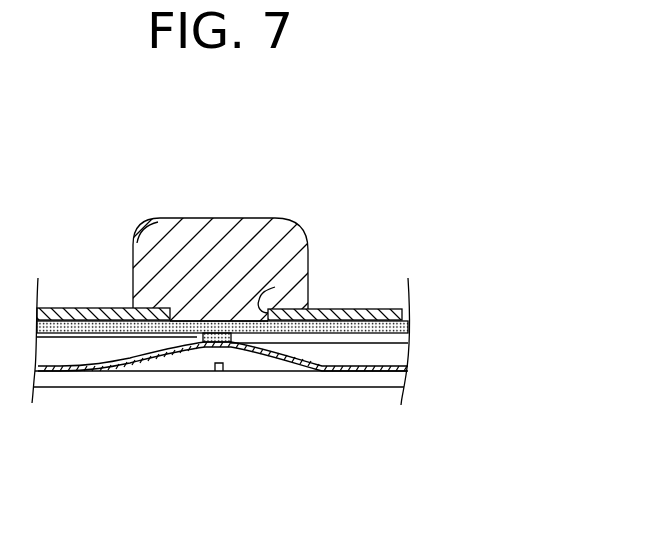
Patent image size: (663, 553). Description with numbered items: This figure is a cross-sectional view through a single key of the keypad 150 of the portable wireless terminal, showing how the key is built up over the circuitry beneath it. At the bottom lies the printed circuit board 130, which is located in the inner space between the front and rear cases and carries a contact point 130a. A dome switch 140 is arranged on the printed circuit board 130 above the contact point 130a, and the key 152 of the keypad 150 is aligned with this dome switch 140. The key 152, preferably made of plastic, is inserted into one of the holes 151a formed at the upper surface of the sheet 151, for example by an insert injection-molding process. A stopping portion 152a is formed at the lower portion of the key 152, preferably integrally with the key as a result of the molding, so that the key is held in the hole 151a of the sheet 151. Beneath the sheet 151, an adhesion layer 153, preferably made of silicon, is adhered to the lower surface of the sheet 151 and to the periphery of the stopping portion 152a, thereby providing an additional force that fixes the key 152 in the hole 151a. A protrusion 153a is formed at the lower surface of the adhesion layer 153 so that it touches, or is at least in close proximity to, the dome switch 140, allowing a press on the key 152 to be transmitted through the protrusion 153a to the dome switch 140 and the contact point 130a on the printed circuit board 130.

The keypad 150 is at (318, 187).
The key 152 is at (220, 237).
The stopping portion 152a is at (291, 323).
The sheet 151 is at (355, 308).
The hole 151a is at (275, 287).
The adhesion layer 153 is at (77, 308).
The protrusion 153a is at (178, 350).
The dome switch 140 is at (195, 342).
The printed circuit board 130 is at (347, 376).
The contact point 130a is at (219, 371).